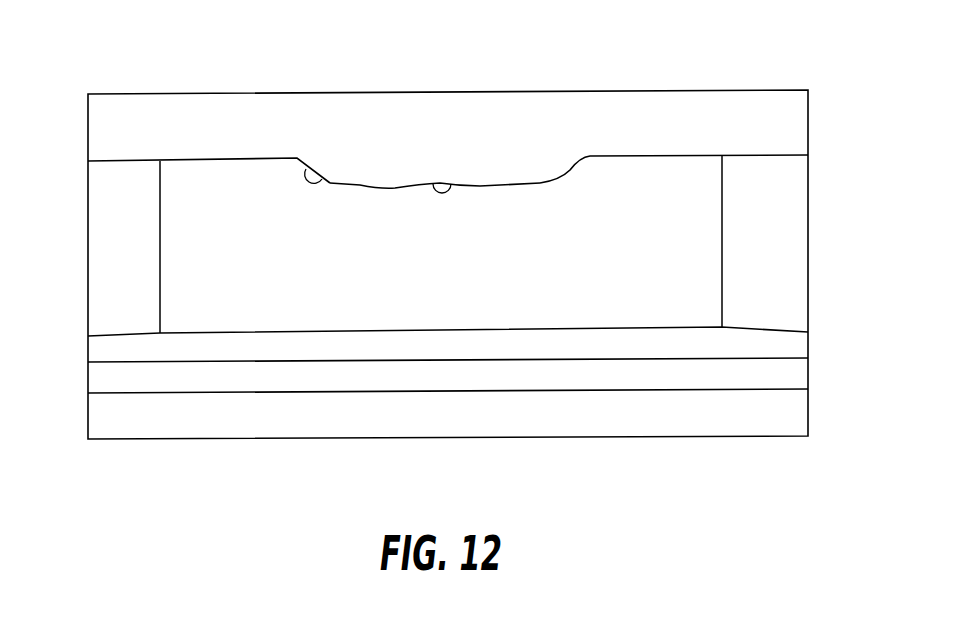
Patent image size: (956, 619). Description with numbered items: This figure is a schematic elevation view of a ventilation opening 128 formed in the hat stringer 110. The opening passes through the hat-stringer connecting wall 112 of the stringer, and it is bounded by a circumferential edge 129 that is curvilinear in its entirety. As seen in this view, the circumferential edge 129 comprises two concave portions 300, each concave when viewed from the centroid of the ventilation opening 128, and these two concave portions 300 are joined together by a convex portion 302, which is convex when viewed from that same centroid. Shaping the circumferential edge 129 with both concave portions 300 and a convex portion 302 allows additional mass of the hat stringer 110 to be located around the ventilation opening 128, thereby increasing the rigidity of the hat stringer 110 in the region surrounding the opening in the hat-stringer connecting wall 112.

The hat stringer 110 is at (796, 178).
The hat-stringer connecting wall 112 is at (104, 195).
The ventilation opening 128 is at (323, 180).
The circumferential edge 129 is at (537, 182).
The concave portions 300 is at (358, 185).
The convex portion 302 is at (432, 183).